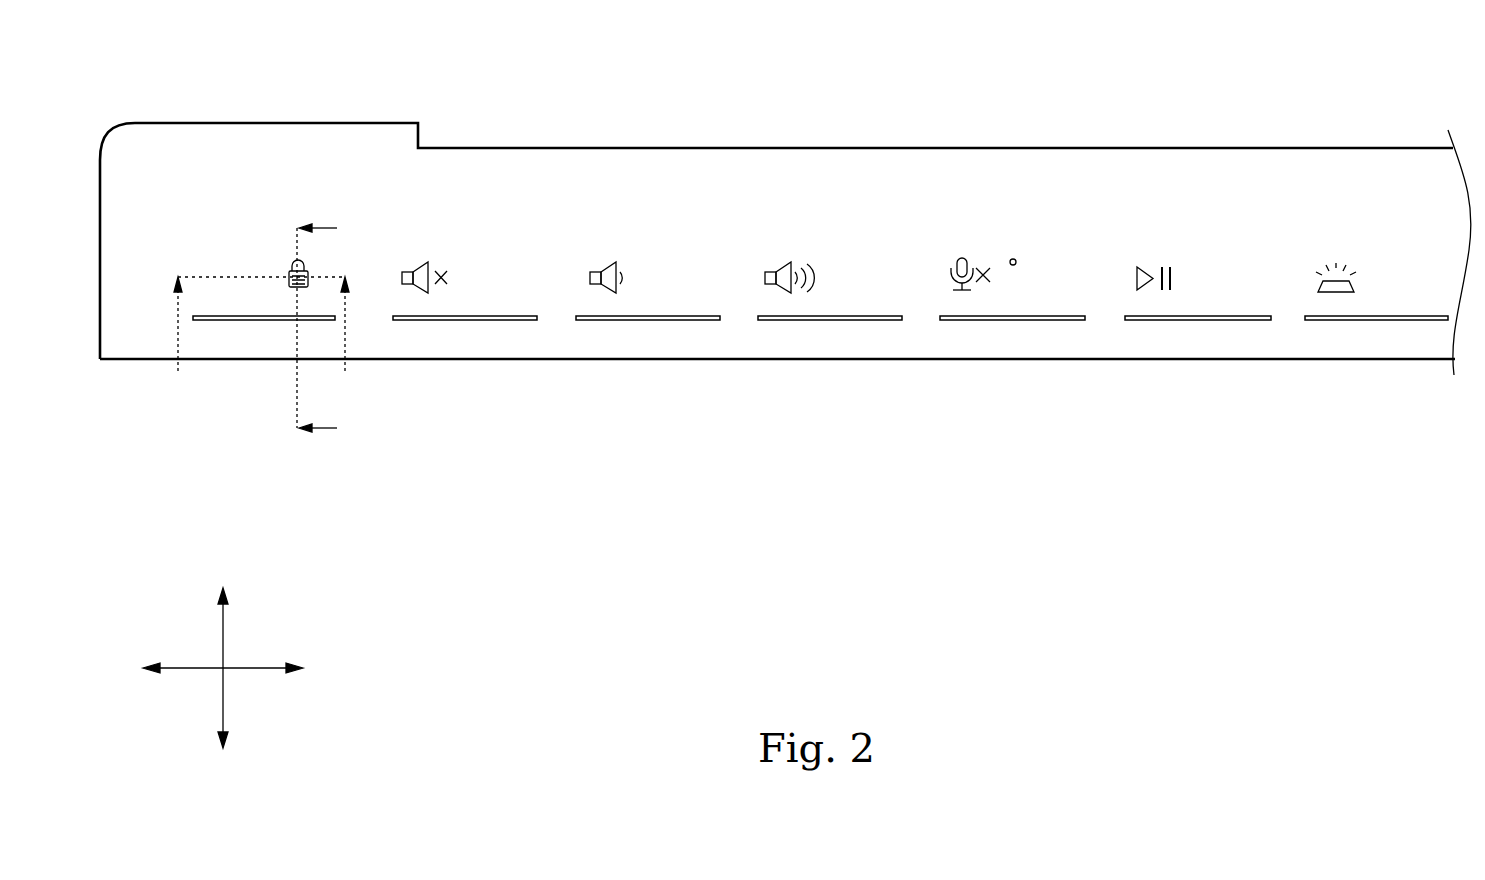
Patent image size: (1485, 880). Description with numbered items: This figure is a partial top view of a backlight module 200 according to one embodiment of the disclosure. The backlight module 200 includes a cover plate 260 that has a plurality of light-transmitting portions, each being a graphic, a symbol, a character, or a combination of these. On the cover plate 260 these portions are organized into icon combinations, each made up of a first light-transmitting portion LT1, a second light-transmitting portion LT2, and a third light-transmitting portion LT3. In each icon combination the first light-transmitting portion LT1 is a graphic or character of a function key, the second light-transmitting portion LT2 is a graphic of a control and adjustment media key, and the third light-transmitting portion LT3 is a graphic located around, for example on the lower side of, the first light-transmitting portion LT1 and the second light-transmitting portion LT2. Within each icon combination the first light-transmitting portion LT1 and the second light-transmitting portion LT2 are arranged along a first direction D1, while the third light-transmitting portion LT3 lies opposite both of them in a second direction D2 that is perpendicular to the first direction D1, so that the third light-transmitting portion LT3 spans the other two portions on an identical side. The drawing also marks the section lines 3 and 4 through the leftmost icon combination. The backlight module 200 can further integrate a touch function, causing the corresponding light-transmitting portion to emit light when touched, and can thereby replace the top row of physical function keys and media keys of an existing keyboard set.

The backlight module 200 is at (153, 50).
The cover plate 260 is at (797, 177).
The first light-transmitting portion LT1 is at (290, 262).
The second light-transmitting portion LT2 is at (225, 268).
The third light-transmitting portion LT3 is at (218, 322).
The section line 3- 3 is at (327, 329).
The section line 4- 4 is at (261, 341).
The first direction D1 is at (226, 669).
The second direction D2 is at (222, 670).